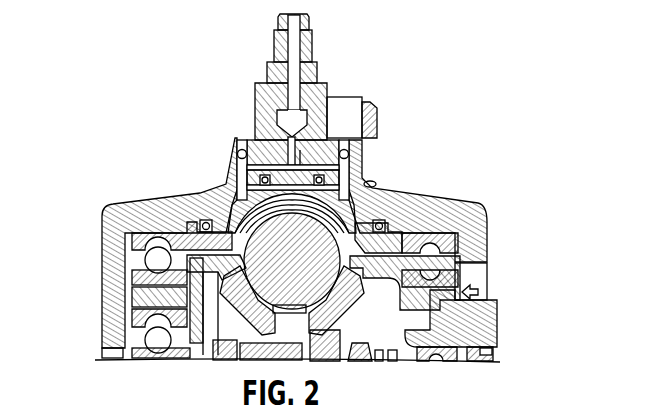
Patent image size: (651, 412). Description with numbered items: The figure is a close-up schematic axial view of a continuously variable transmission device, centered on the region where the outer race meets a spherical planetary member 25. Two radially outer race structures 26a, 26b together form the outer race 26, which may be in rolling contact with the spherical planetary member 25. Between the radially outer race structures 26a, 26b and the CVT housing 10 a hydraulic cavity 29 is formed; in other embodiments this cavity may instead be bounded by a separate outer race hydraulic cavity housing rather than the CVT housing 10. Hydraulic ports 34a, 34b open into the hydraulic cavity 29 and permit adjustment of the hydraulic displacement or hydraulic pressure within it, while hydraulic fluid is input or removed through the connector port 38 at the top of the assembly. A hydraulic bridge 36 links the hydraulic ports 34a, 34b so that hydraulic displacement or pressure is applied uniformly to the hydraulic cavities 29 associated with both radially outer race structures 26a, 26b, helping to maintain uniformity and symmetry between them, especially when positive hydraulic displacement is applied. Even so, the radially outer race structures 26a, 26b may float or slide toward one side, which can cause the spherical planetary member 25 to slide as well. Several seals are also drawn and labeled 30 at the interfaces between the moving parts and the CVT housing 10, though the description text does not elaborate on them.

The CVT housing 10 is at (488, 232).
The spherical planetary member 25 is at (345, 268).
The outer race 26 is at (348, 185).
The radially outer race structure 26a is at (232, 222).
The radially outer race structure 26b is at (362, 222).
The hydraulic cavity 29 is at (242, 187).
The seal 30 is at (262, 178).
The hydraulic port 34a is at (236, 160).
The hydraulic port 34b is at (368, 178).
The hydraulic bridge 36 is at (256, 105).
The connector port 38 is at (312, 48).